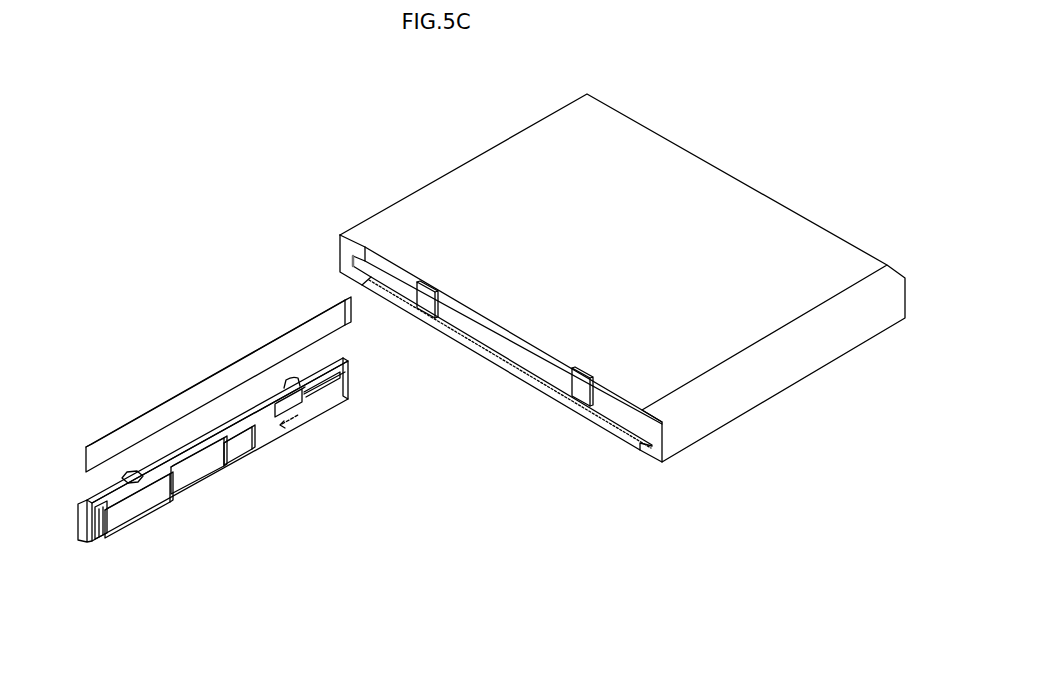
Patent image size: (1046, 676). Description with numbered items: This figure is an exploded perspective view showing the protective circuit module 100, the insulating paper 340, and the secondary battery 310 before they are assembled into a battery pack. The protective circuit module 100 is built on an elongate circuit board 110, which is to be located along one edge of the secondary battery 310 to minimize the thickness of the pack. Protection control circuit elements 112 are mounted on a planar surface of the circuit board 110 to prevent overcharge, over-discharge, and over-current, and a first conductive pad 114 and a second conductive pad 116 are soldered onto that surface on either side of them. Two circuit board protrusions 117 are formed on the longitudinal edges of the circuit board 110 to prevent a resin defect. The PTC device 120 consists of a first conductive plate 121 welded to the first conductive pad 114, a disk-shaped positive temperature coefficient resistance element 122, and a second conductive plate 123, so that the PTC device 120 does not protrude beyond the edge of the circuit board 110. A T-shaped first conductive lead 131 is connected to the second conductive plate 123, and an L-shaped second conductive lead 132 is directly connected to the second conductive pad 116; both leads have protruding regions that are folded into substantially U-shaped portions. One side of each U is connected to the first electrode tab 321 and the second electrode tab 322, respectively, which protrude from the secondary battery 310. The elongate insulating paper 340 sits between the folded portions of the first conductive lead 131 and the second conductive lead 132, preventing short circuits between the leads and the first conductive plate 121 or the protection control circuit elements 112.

The protective circuit module 100 is at (224, 460).
The circuit board 110 is at (224, 425).
The protection control circuit elements 112 is at (192, 474).
The first conductive pad 114 is at (333, 368).
The second conductive pad 116 is at (97, 497).
The circuit board protrusions 117 is at (130, 472).
The PTC device 120 is at (335, 435).
The first conductive plate 121 is at (333, 379).
The positive temperature coefficient resistance element 122 is at (318, 393).
The second conductive plate 123 is at (304, 399).
The first conductive lead 131 is at (247, 453).
The second conductive lead 132 is at (140, 513).
The secondary battery 310 is at (725, 185).
The first electrode tab 321 is at (423, 309).
The second electrode tab 322 is at (580, 398).
The insulating paper 340 is at (232, 373).